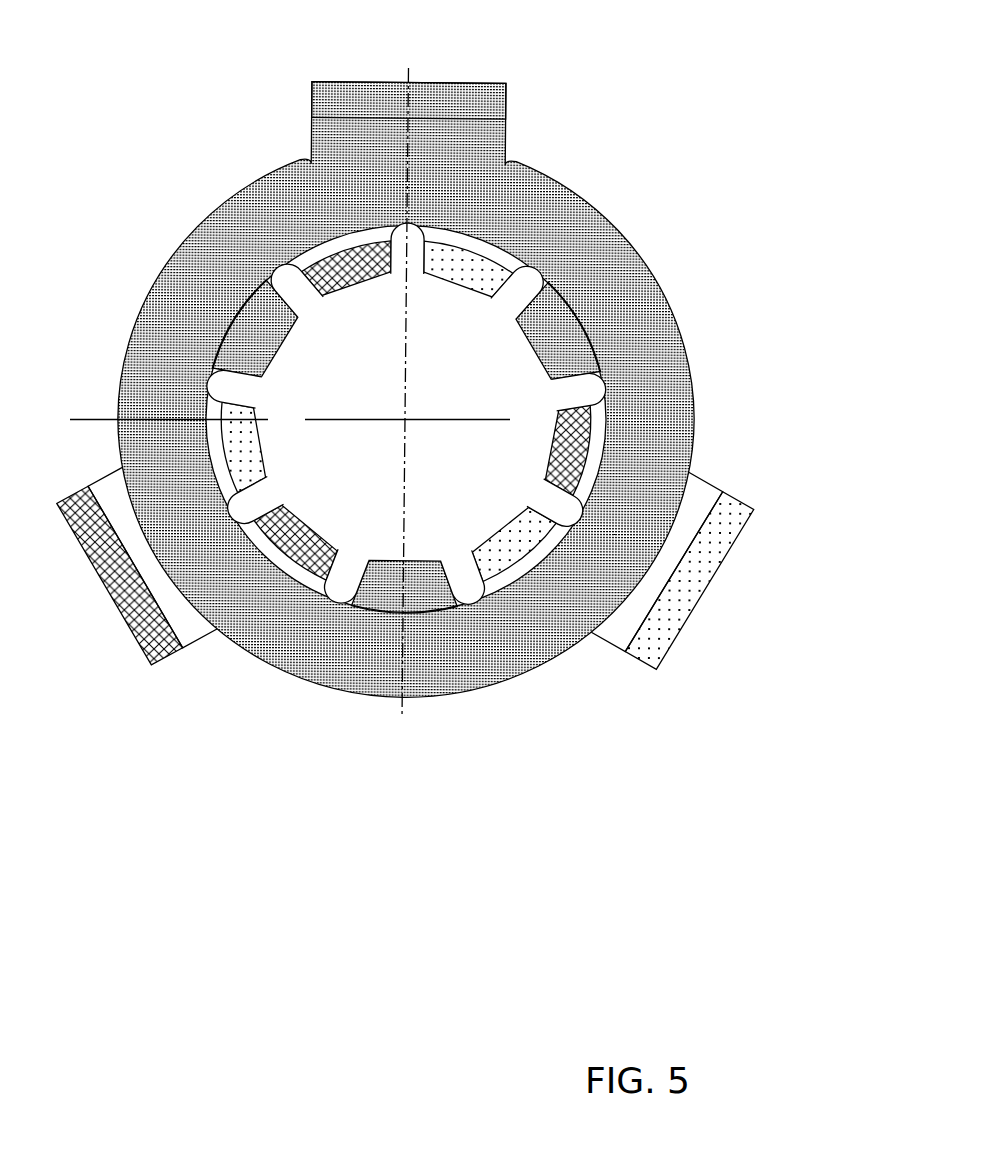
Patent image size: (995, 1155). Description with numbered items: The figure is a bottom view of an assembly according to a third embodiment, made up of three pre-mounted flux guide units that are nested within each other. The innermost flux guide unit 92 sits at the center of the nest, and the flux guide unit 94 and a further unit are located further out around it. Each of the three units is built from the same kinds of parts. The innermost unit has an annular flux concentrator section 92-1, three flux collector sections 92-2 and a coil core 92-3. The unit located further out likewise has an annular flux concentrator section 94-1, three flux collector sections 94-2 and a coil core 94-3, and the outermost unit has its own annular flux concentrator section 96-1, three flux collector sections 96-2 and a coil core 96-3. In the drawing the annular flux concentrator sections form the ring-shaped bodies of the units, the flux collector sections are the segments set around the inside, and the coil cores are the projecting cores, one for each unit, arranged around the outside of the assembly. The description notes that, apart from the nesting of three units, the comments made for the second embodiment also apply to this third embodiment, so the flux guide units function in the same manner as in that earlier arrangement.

The innermost flux guide unit 92 is at (683, 257).
The annular flux concentrator section 92-1 is at (556, 216).
The flux collector sections 92-2 is at (277, 342).
The coil core 92-3 is at (447, 92).
The flux guide unit 94 is at (733, 467).
The annular flux concentrator section 94-1 is at (215, 413).
The flux collector sections 94-2 is at (247, 462).
The coil core 94-3 is at (707, 555).
The annular flux concentrator section 96-1 is at (308, 585).
The flux collector sections 96-2 is at (292, 541).
The coil core 96-3 is at (133, 603).